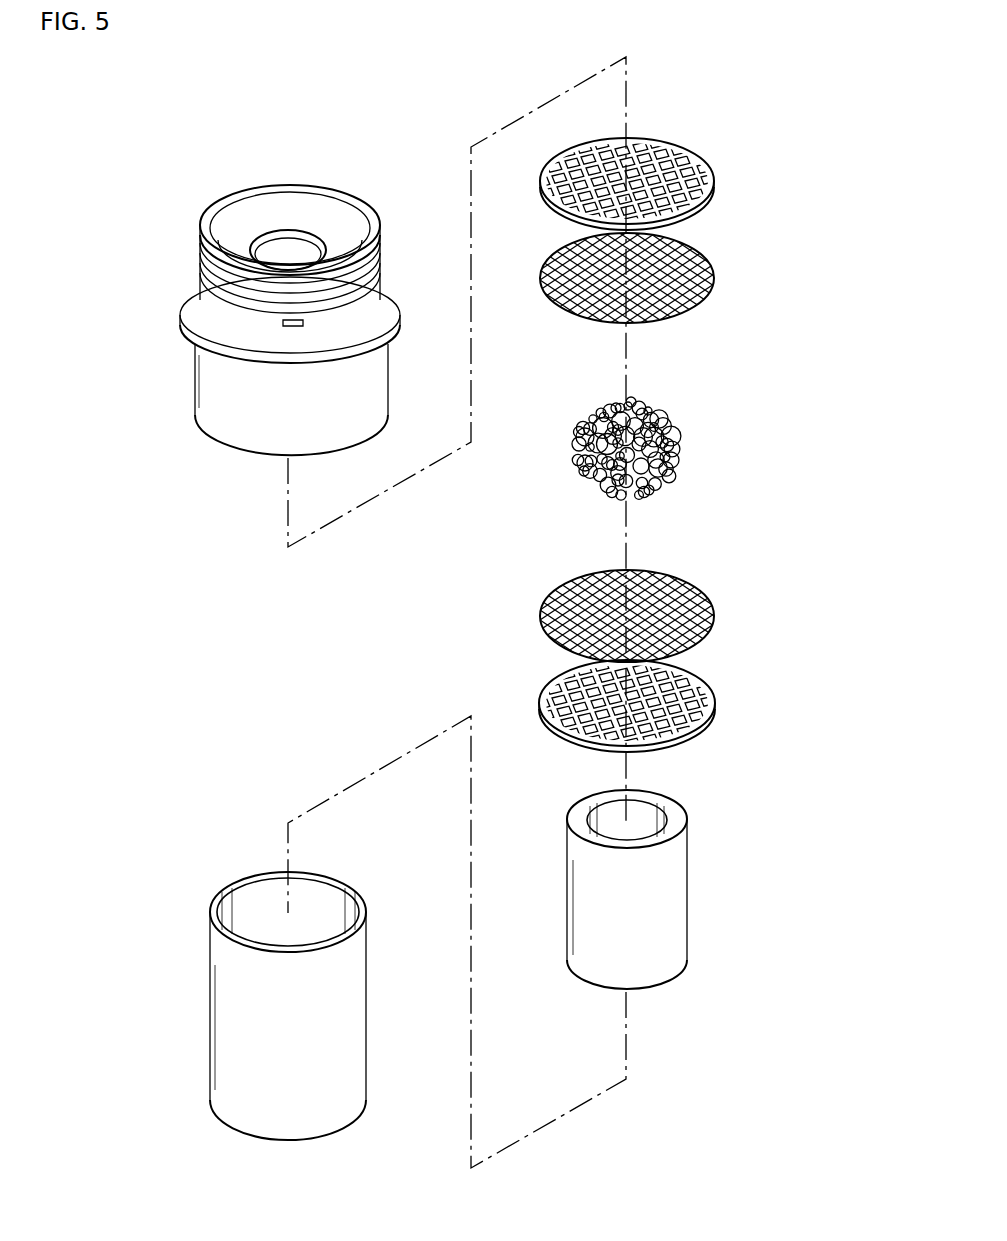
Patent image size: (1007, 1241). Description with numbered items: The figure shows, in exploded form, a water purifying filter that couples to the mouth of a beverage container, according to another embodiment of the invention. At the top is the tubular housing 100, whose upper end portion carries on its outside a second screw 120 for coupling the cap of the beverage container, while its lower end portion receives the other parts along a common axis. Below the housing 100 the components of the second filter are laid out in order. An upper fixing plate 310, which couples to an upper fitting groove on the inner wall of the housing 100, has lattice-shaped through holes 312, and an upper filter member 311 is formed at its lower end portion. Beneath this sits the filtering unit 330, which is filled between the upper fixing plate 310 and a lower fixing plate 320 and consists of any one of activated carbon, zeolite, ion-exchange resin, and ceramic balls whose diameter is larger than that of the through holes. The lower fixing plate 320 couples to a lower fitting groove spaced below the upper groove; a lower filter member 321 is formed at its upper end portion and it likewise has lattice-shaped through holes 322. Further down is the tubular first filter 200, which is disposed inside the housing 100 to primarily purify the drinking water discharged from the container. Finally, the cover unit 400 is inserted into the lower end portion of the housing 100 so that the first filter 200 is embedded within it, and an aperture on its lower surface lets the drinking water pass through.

The housing 100 is at (225, 320).
The second screw 120 is at (200, 240).
The first filter 200 is at (670, 895).
The upper fixing plate 310 is at (693, 133).
The upper filter member 311 is at (703, 268).
The through holes 312 is at (651, 143).
The lower fixing plate 320 is at (641, 706).
The lower filter member 321 is at (703, 592).
The through holes 322 is at (560, 677).
The filtering unit 330 is at (677, 433).
The cover unit 400 is at (233, 992).